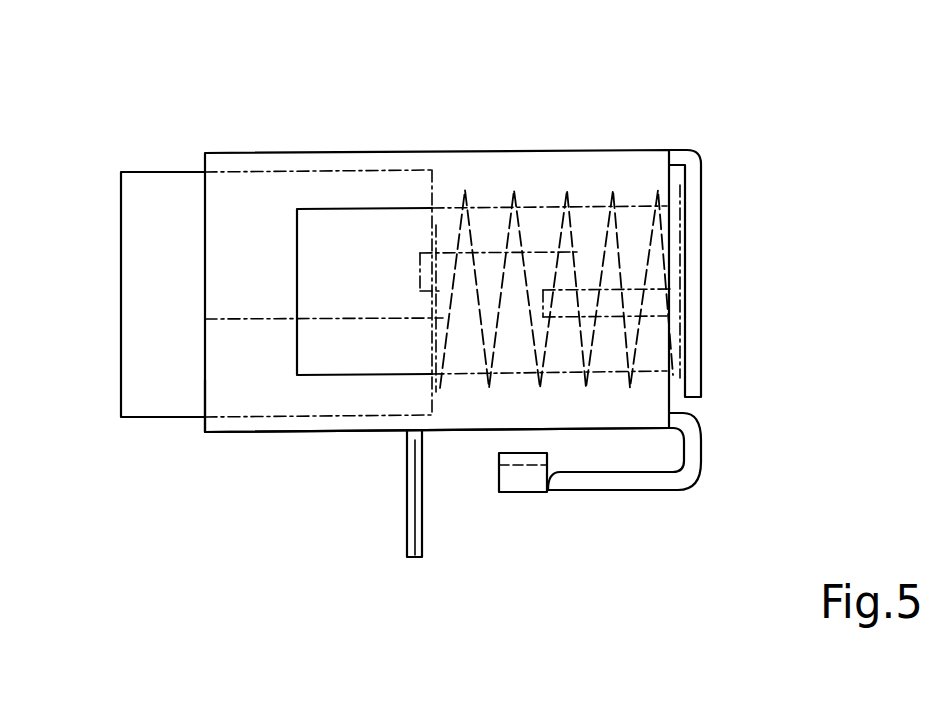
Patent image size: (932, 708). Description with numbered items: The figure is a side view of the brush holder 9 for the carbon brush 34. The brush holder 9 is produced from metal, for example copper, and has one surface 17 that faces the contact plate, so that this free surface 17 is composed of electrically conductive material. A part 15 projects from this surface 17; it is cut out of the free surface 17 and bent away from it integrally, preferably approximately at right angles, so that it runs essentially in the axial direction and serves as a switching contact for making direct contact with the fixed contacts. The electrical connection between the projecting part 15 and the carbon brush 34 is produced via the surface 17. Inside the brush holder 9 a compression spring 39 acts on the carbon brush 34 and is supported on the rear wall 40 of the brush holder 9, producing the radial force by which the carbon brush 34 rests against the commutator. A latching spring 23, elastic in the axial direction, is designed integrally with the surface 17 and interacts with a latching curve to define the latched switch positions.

The brush holder 9 is at (448, 167).
The carbon brush 34 is at (147, 220).
The compression spring 39 is at (621, 249).
The rear wall 40 is at (693, 298).
The surface 17 is at (233, 432).
The projecting part 15 is at (405, 523).
The latching spring 23 is at (630, 478).